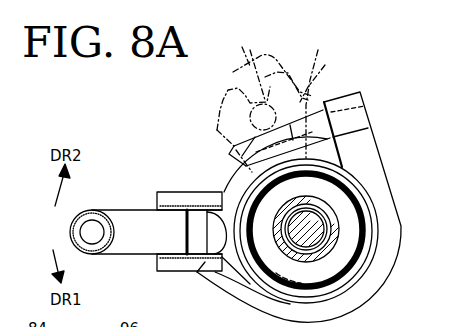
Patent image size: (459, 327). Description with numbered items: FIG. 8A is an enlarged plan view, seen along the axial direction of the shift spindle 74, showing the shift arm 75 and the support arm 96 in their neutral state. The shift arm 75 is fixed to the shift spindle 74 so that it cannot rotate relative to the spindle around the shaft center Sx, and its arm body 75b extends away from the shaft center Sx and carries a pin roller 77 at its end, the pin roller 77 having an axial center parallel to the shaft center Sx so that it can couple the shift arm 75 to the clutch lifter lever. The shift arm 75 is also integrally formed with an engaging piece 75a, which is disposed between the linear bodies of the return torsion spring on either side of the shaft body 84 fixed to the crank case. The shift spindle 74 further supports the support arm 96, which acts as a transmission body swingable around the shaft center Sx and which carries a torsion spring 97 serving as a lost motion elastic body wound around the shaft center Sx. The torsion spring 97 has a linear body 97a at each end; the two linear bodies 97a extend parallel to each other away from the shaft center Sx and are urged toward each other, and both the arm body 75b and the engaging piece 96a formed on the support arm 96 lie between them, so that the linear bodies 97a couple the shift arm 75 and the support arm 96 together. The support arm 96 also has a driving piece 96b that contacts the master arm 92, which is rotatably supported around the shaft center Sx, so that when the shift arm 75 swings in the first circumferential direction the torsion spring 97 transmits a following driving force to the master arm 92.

The shift spindle 74 is at (312, 228).
The shift arm 75 is at (272, 115).
The engaging piece 75a is at (329, 80).
The arm body 75b is at (146, 228).
The pin roller 77 is at (79, 208).
The shaft body 84 is at (264, 80).
The master arm 92 is at (318, 95).
The support arm 96 is at (311, 205).
The engaging piece 96a is at (217, 272).
The driving piece 96b is at (362, 97).
The torsion spring 97 is at (376, 200).
The linear body 97a is at (182, 200).
The shaft center Sx is at (330, 245).